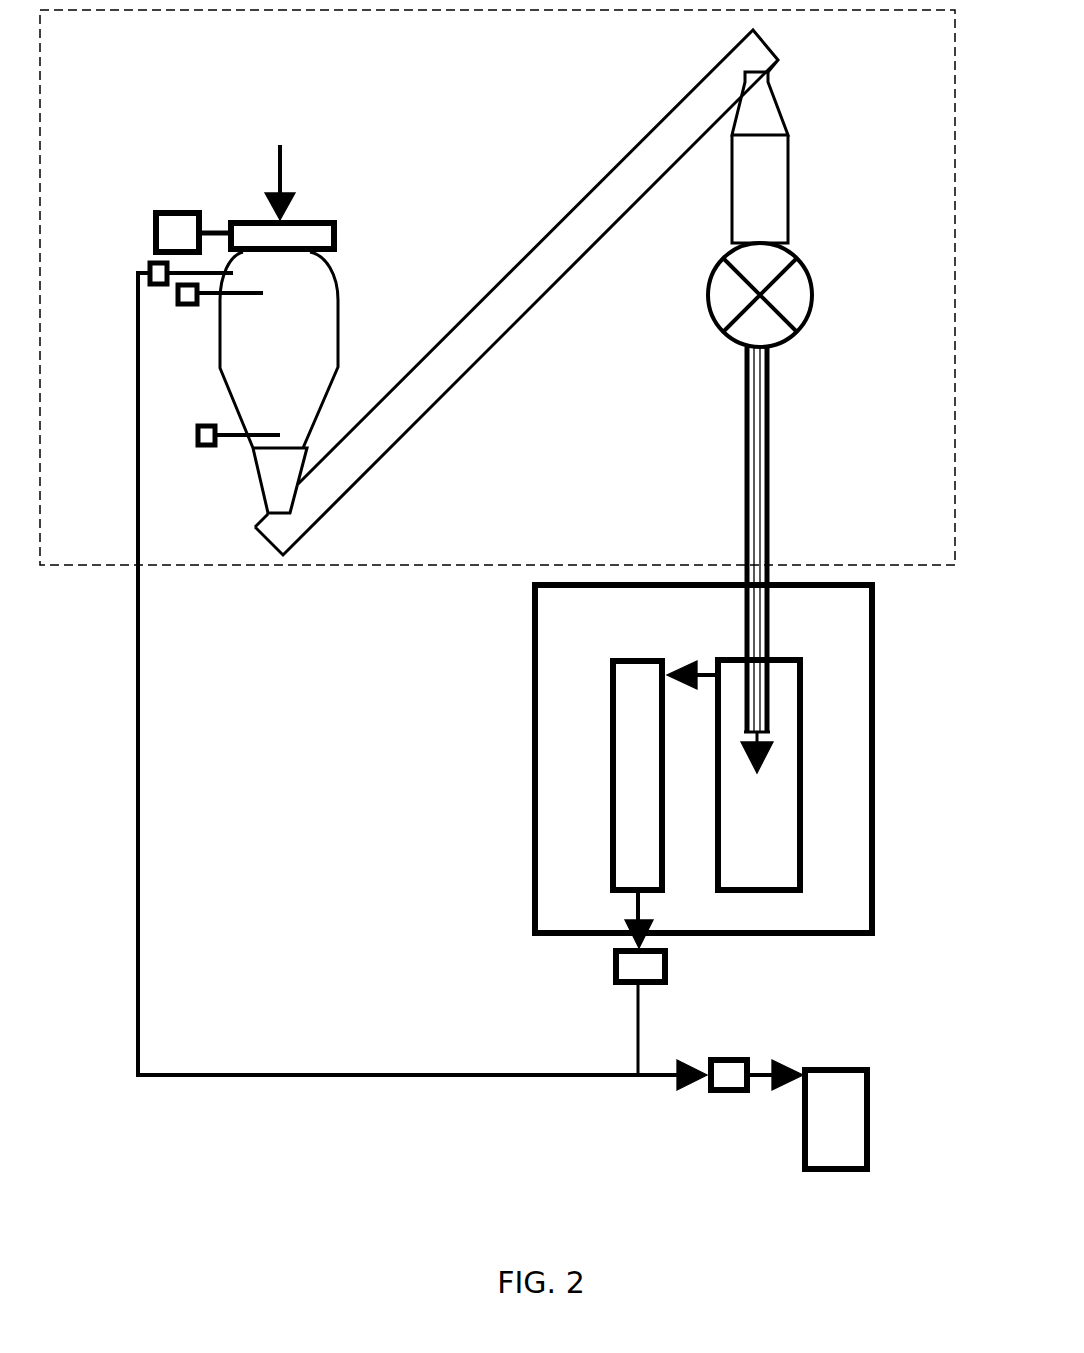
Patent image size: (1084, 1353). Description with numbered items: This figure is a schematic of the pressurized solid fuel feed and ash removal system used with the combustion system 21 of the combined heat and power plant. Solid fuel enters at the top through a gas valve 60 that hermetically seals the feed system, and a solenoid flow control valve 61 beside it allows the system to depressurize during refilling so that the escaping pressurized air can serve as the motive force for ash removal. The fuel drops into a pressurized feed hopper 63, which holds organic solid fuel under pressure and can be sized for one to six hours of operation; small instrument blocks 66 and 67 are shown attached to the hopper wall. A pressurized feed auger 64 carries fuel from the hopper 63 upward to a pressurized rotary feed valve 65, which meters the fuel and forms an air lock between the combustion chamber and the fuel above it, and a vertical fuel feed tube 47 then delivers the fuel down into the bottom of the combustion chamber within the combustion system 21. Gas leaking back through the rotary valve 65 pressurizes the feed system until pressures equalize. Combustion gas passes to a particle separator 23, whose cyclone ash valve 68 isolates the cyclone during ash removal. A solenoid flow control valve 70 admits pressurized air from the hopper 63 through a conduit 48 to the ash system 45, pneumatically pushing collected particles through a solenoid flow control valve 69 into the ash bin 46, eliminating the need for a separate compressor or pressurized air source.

The gas valve 60 is at (237, 220).
The solenoid flow control valve 61 is at (160, 238).
The solenoid flow control valve 70 is at (143, 278).
The sensor 66 is at (180, 307).
The sensor 67 is at (203, 448).
The pressurized feed hopper 63 is at (340, 325).
The pressurized feed auger 64 is at (495, 285).
The pressurized rotary feed valve 65 is at (807, 290).
The vertical fuel feed tube 47 is at (743, 457).
The combustion system 21 is at (797, 715).
The particle separator 23 is at (615, 713).
The cyclone ash valve 68 is at (668, 965).
The ash system 45 is at (638, 1040).
The conduit 48 is at (140, 805).
The solenoid flow control valve 69 is at (727, 1093).
The ash bin 46 is at (827, 1155).